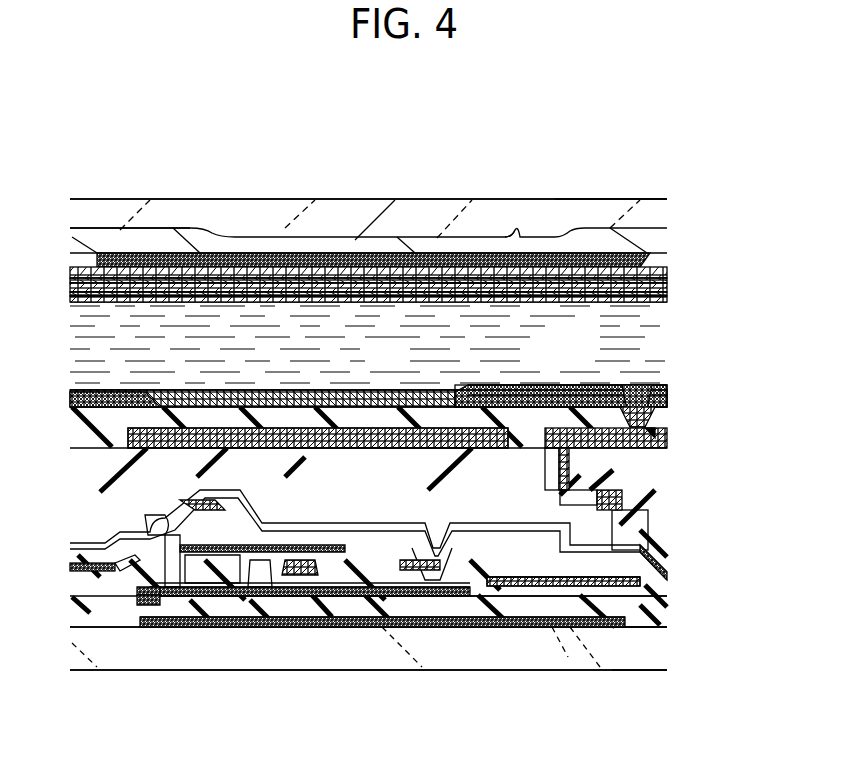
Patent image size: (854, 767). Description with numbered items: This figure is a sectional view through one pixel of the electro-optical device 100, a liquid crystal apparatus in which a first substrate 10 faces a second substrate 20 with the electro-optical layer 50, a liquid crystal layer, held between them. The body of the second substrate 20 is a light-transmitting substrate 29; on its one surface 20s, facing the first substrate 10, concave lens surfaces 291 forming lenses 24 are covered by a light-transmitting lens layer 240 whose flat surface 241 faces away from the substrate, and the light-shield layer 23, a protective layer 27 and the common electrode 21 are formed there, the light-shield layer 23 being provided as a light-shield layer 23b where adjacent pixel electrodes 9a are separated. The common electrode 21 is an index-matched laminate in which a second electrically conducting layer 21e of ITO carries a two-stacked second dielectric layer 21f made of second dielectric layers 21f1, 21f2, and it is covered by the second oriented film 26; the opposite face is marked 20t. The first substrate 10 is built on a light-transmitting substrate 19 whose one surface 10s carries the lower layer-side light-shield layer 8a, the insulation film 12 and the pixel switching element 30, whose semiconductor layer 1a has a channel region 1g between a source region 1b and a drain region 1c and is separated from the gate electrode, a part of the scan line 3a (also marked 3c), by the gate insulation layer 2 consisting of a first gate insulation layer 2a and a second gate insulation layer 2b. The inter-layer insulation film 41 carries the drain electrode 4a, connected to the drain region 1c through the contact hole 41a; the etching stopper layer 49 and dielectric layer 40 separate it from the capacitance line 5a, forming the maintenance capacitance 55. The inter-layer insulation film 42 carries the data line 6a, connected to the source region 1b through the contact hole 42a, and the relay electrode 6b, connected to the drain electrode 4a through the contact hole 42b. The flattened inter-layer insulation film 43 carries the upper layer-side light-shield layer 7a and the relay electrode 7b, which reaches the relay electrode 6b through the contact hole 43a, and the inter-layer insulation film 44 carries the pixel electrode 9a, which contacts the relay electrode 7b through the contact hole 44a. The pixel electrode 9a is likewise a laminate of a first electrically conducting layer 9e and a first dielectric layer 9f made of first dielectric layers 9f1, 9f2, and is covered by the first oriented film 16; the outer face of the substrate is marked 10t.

The electro-optical device 100 is at (652, 198).
The second substrate 20 is at (68, 199).
The first substrate 10 is at (68, 385).
The electro-optical layer 50 is at (143, 357).
The light-transmitting substrate 29 is at (643, 215).
The lens surfaces 291 is at (115, 228).
The lenses 24 is at (72, 135).
The lens layer 240 is at (158, 245).
The flat surface 241 is at (353, 248).
The common electrode 21 is at (133, 282).
The second electrically conducting layer 21e is at (133, 283).
The second dielectric layer 21f is at (545, 313).
The second dielectric layer 21f1 is at (478, 283).
The second dielectric layer 21f2 is at (467, 298).
The light-shield layer 23 is at (417, 253).
The light-shield layer 23b is at (417, 254).
The second oriented film 26 is at (180, 298).
The protective layer 27 is at (247, 273).
The one surface of the second substrate 20s is at (512, 237).
The top surface of counter substrate 20t is at (590, 198).
The first oriented film 16 is at (373, 400).
The first dielectric layer 9f is at (693, 313).
The first dielectric layer 9f1 is at (610, 400).
The first dielectric layer 9f2 is at (577, 390).
The pixel electrode 9a is at (667, 400).
The first electrically conducting layer 9e is at (667, 401).
The inter-layer insulation film 44 is at (658, 413).
The contact hole 44a is at (652, 430).
The inter-layer insulation film 43 is at (657, 487).
The contact hole 43a is at (560, 483).
The upper layer-side light-shield layer 7a is at (373, 450).
The relay electrode 7b is at (556, 455).
The data line 6a is at (190, 500).
The relay electrode 6b is at (620, 495).
The inter-layer insulation film 42 is at (667, 552).
The contact hole 42a is at (150, 530).
The contact hole 42b is at (650, 515).
The etching stopper layer 49 is at (667, 572).
The inter-layer insulation film 41 is at (667, 585).
The contact hole 41a is at (428, 598).
The insulation film 12 is at (657, 610).
The light-transmitting substrate 19 is at (655, 647).
The one surface of the first substrate 10s is at (650, 620).
The bottom surface of substrate 10t is at (660, 672).
The semiconductor layer 1a is at (275, 605).
The source region 1b is at (253, 610).
The drain region 1c is at (400, 600).
The channel region 1g is at (295, 600).
The pixel switching element 30 is at (263, 600).
The scan line 3a is at (330, 600).
The gate line portion 3c is at (330, 601).
The lower layer-side light-shield layer 8a is at (458, 600).
The gate insulation layer 2 is at (575, 716).
The first gate insulation layer 2a is at (470, 600).
The second gate insulation layer 2b is at (530, 600).
The maintenance capacitance 55 is at (220, 710).
The capacitance line 5a is at (157, 610).
The dielectric layer 40 is at (177, 570).
The drain electrode 4a is at (233, 570).